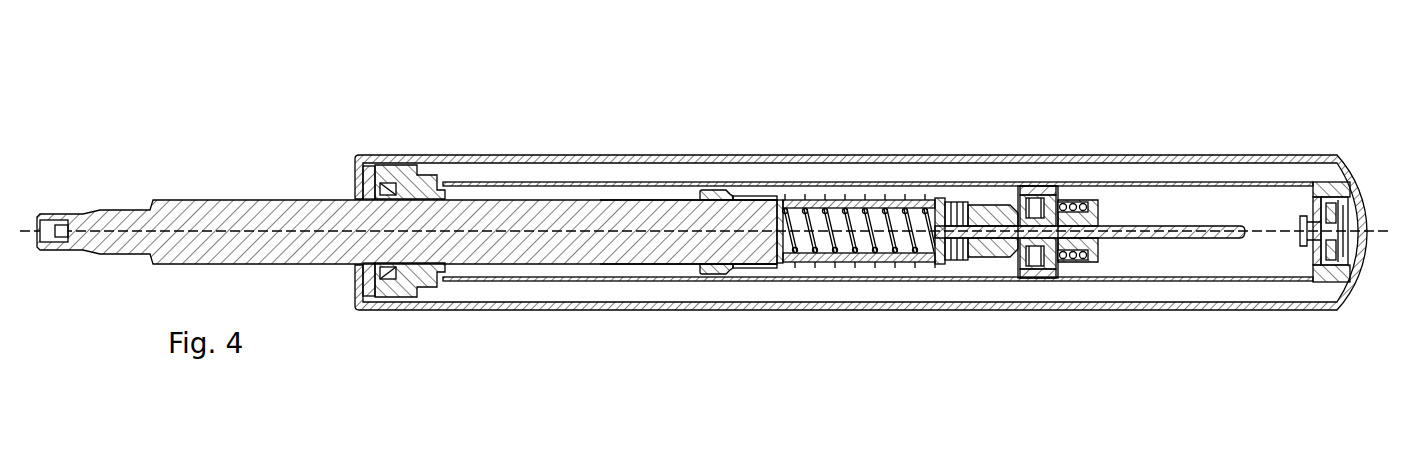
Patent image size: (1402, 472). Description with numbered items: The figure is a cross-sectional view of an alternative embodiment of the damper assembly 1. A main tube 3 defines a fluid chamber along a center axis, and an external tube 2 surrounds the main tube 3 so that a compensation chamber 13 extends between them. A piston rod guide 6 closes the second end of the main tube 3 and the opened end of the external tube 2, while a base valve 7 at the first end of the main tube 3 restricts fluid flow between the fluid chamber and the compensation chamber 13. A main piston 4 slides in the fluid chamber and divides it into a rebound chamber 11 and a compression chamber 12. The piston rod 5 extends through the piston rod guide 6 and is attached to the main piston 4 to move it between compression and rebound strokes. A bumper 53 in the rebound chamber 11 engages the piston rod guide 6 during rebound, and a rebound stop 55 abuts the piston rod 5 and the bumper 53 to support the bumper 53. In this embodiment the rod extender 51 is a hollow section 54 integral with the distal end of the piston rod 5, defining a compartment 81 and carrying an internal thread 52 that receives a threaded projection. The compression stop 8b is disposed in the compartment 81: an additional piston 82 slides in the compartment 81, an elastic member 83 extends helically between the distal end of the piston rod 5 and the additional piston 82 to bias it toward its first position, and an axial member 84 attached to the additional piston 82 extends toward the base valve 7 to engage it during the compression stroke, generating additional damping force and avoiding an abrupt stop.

The damper assembly 1 is at (585, 140).
The external tube 2 is at (514, 155).
The main tube 3 is at (542, 182).
The main piston 4 is at (1067, 182).
The piston rod 5 is at (622, 200).
The piston rod guide 6 is at (407, 172).
The base valve 7 is at (1323, 174).
The compression stop 8b is at (907, 164).
The rebound chamber 11 is at (661, 200).
The compression chamber 12 is at (1240, 198).
The compensation chamber 13 is at (456, 182).
The rod extender 51 is at (1012, 200).
The internal thread 52 is at (980, 200).
The bumper 53 is at (711, 198).
The hollow section 54 is at (851, 200).
The rebound stop 55 is at (752, 200).
The compartment 81 is at (835, 200).
The additional piston 82 is at (951, 193).
The elastic member 83 is at (798, 200).
The axial member 84 is at (1157, 226).